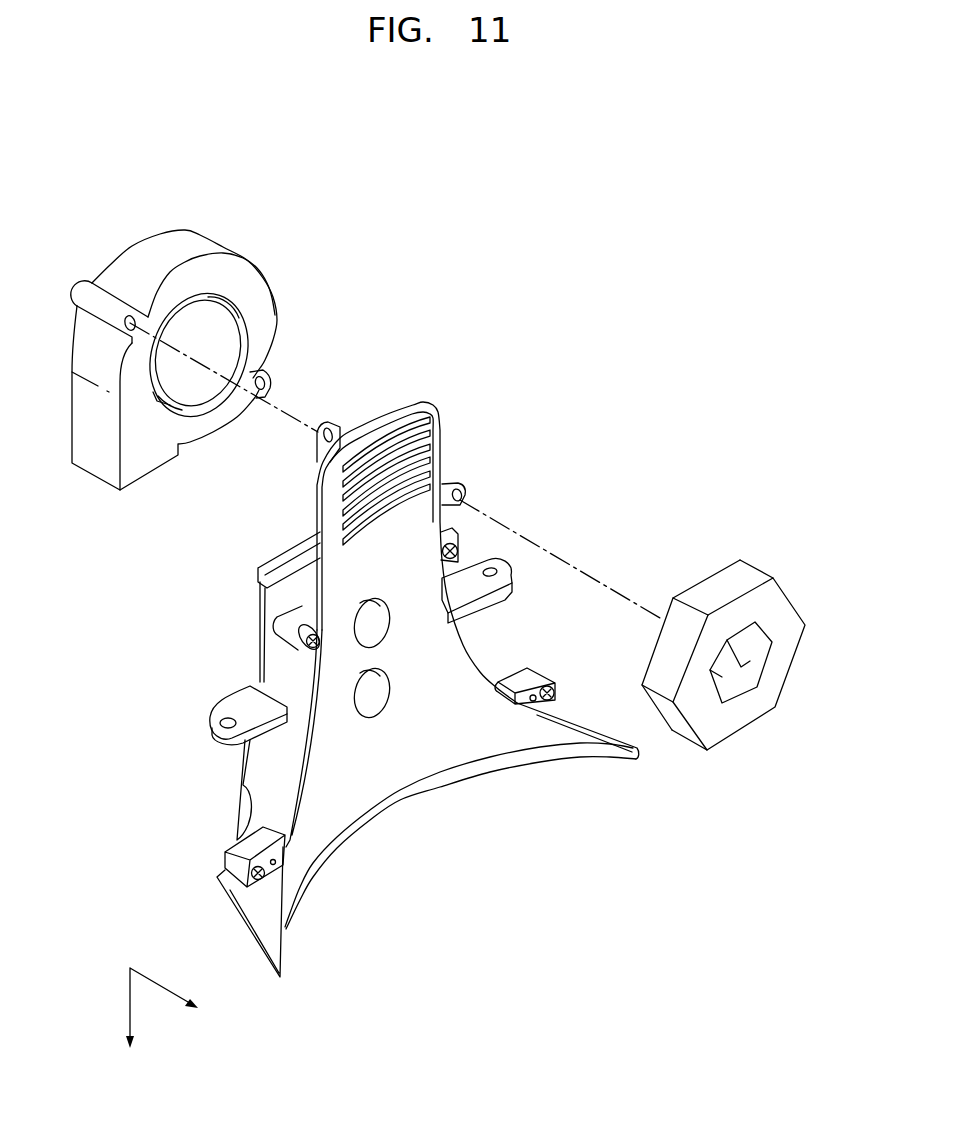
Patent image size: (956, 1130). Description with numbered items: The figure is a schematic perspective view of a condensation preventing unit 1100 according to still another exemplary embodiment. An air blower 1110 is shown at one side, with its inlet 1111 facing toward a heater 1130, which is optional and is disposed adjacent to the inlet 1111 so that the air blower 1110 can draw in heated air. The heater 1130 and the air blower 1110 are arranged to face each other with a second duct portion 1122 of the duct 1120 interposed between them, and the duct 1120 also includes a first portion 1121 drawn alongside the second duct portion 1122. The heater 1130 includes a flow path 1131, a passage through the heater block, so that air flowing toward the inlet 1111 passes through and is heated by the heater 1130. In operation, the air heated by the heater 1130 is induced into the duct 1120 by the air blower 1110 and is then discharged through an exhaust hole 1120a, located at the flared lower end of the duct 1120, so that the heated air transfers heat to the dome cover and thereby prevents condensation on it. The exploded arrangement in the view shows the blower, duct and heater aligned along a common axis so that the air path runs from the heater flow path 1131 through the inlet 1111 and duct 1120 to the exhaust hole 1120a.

The condensation preventing unit 1100 is at (527, 285).
The air blower 1110 is at (135, 238).
The inlet 1111 is at (246, 310).
The duct 1120 is at (139, 770).
The duct frame body 1121 is at (263, 770).
The second duct portion 1122 is at (320, 798).
The exhaust hole 1120a is at (450, 773).
The heater 1130 is at (748, 568).
The flow path 1131 is at (757, 652).